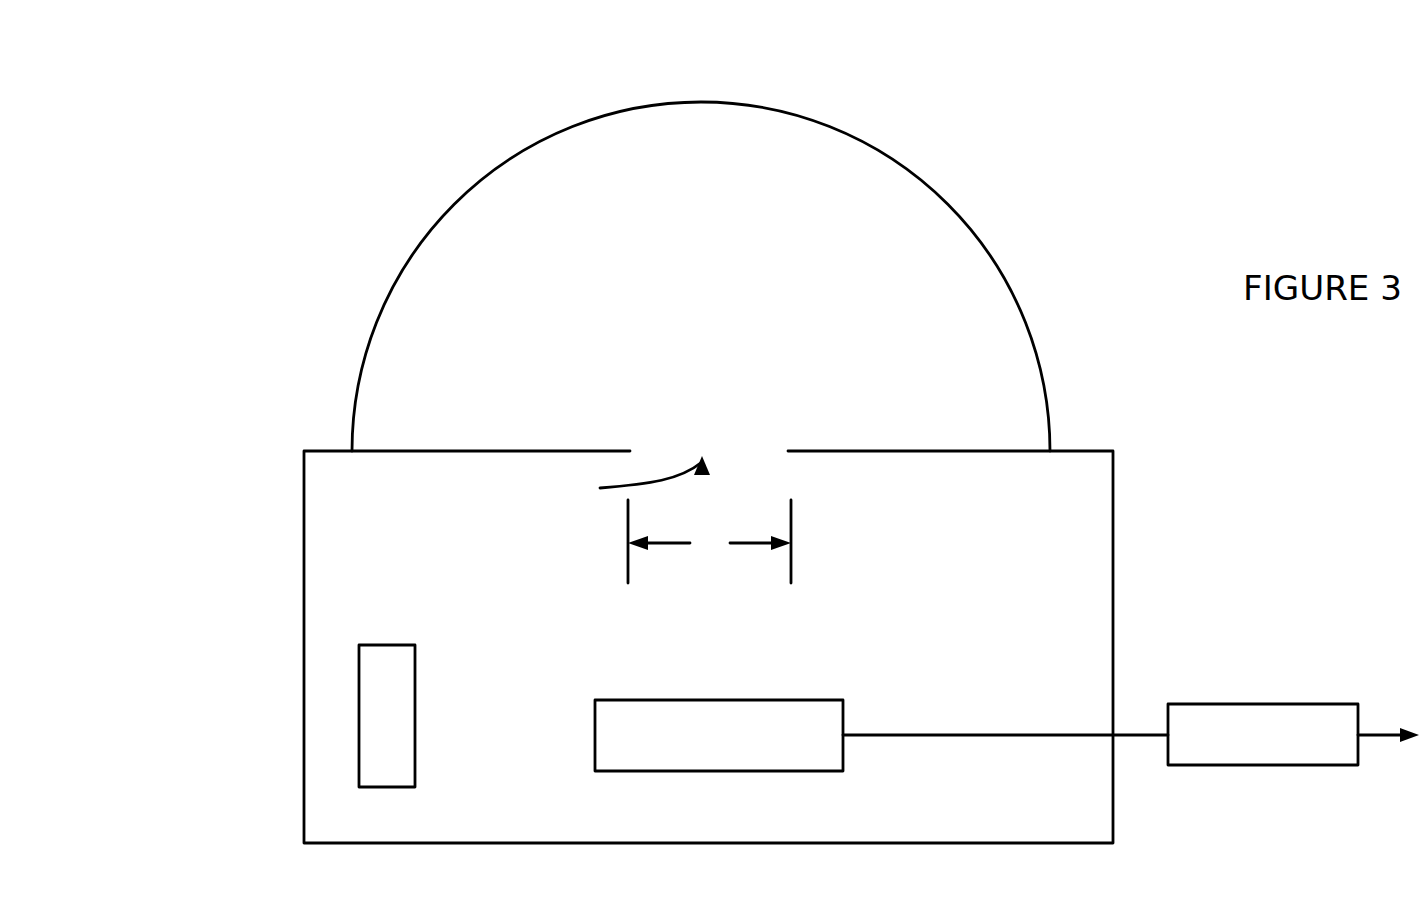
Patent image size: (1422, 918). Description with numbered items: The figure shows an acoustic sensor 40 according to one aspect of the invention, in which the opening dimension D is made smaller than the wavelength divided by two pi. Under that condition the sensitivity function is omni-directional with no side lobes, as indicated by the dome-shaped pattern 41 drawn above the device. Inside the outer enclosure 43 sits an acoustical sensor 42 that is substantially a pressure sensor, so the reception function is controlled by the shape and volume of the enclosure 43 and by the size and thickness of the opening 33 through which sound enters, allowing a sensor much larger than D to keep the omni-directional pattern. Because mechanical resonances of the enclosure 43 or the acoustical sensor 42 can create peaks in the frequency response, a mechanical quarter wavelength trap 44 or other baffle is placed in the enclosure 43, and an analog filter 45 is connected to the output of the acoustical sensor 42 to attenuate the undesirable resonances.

The acoustic sensor 40 is at (158, 181).
The sensitivity function 41 is at (948, 210).
The outer enclosure 43 is at (1114, 496).
The opening 33 is at (600, 488).
The mechanical quarter wavelength trap 44 is at (372, 712).
The acoustical sensor 42 is at (612, 738).
The analog filter 45 is at (1272, 704).